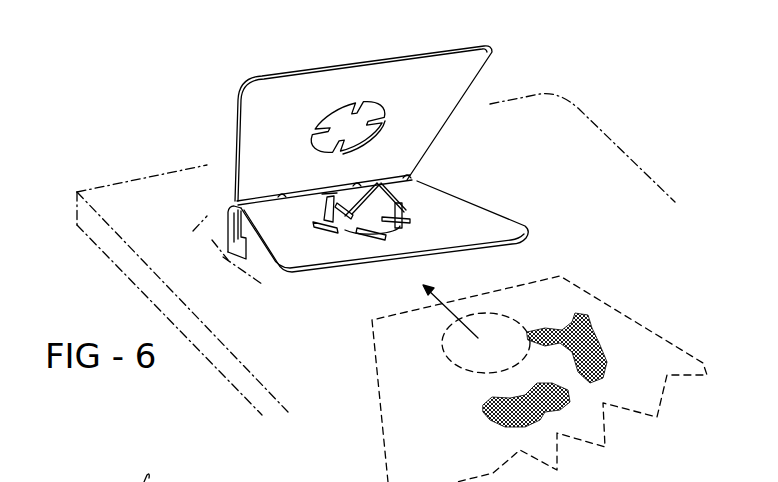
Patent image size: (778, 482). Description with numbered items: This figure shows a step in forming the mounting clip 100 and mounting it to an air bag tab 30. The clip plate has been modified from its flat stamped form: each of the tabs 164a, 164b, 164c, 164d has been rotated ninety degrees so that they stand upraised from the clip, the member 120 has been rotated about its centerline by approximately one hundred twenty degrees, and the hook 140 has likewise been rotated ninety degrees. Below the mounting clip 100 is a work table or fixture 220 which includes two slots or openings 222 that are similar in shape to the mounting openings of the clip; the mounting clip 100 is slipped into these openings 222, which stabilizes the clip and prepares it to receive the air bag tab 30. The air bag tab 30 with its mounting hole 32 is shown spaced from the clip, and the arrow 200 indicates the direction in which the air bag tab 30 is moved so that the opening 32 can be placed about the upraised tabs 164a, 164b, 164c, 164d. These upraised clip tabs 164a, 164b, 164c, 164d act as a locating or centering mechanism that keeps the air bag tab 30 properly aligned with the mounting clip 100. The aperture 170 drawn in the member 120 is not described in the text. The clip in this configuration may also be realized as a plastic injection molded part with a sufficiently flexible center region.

The mounting clip 100 is at (217, 74).
The member 120 is at (263, 127).
The hook 140 is at (229, 240).
The tab 164a is at (413, 218).
The tab 164b is at (407, 183).
The tab 164c is at (345, 200).
The tab 164d is at (355, 216).
The aperture 170 is at (343, 127).
The arrow 200 is at (447, 307).
The work table or fixture 220 is at (137, 205).
The slots or openings 222 is at (197, 232).
The air bag tab 30 is at (417, 408).
The mounting hole 32 is at (440, 366).